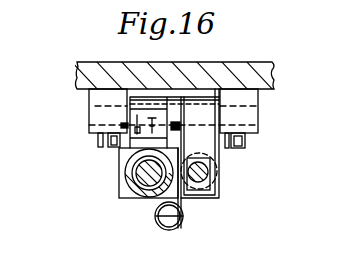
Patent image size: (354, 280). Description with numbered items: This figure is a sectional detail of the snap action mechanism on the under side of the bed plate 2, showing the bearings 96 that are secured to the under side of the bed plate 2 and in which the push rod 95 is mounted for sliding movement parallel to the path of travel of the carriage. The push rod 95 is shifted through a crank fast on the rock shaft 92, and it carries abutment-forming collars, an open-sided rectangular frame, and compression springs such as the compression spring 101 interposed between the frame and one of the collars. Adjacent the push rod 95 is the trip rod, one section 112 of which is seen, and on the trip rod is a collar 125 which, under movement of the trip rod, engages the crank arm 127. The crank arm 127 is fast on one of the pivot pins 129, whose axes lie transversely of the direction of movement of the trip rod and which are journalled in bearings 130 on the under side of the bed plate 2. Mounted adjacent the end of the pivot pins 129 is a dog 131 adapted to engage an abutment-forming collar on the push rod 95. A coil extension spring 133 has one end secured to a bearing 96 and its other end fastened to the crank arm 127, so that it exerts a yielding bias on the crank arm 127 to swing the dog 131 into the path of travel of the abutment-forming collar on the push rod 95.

The bed plate 2 is at (232, 78).
The rock shaft 92 is at (43, 12).
The bearings 130 is at (106, 100).
The pivot pins 129 is at (88, 121).
The dog 131 is at (143, 130).
The compression spring 101 is at (130, 171).
The push rod 95 is at (132, 184).
The bearings 96 is at (130, 198).
The crank arm 127 is at (210, 140).
The trip rod section 112 is at (201, 177).
The collar 125 is at (201, 192).
The coil extension spring 133 is at (184, 231).